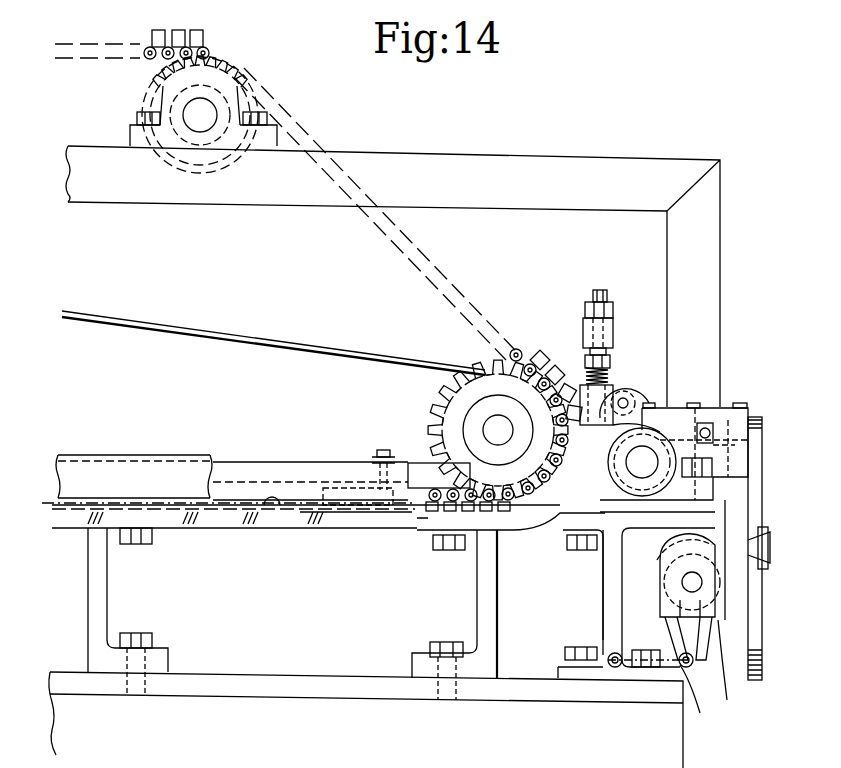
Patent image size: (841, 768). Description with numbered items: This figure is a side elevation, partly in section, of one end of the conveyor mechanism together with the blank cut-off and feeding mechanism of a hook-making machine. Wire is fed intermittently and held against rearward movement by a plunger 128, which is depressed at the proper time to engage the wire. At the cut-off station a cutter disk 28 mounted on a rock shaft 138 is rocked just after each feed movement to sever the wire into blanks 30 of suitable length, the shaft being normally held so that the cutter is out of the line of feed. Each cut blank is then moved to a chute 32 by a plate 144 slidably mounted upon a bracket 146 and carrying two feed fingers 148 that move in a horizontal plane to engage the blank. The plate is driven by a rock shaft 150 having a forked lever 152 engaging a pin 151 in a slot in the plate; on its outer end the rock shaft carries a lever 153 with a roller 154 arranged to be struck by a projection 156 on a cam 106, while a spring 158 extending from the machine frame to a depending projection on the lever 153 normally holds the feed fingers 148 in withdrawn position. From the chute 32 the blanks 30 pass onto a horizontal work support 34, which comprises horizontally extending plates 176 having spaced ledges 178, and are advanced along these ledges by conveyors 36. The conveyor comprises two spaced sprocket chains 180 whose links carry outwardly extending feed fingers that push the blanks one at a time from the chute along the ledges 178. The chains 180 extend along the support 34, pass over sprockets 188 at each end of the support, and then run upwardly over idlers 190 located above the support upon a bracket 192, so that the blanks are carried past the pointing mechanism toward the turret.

The cutter disk 28 is at (620, 406).
The blanks 30 is at (331, 510).
The chute 32 is at (565, 502).
The work support 34 is at (397, 514).
The conveyors 36 is at (530, 360).
The cam 106 is at (743, 636).
The plunger 128 is at (577, 398).
The rock shaft 138 is at (632, 467).
The plate 144 is at (702, 420).
The bracket 146 is at (735, 465).
The feed fingers 148 is at (618, 398).
The rock shaft 150 is at (695, 583).
The pin 151 is at (714, 420).
The forked lever 152 is at (735, 444).
The lever 153 is at (668, 582).
The roller 154 is at (682, 540).
The projection 156 is at (727, 694).
The spring 158 is at (698, 713).
The plates 176 is at (220, 523).
The ledges 178 is at (265, 512).
The sprocket chains 180 is at (514, 346).
The sprockets 188 is at (458, 421).
The idlers 190 is at (213, 73).
The bracket 192 is at (357, 163).